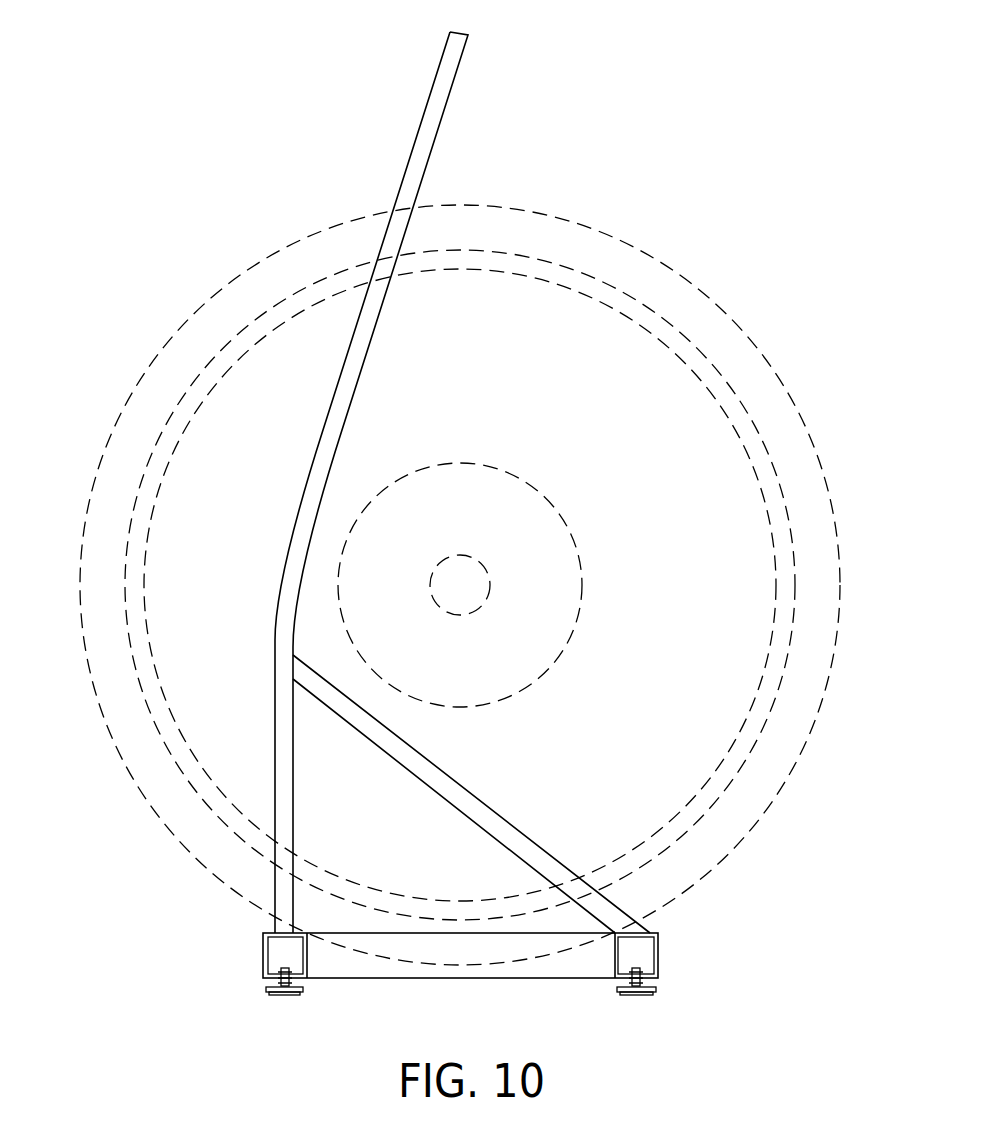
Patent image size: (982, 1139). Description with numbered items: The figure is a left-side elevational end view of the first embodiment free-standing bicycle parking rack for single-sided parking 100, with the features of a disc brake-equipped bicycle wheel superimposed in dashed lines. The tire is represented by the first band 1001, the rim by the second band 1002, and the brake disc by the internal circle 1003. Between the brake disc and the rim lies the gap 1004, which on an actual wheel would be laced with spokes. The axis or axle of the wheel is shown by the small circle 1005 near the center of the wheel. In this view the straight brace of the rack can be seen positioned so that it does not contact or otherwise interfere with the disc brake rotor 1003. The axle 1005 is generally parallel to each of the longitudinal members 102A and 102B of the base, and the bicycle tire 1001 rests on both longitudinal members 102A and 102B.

The free-standing bicycle parking rack for single-sided parking 100 is at (401, 74).
The longitudinal member 102A is at (268, 958).
The longitudinal member 102B is at (655, 958).
The first band 1001 is at (218, 323).
The second band 1002 is at (187, 407).
The internal circle 1003 is at (522, 533).
The gap 1004 is at (587, 409).
The small circle 1005 is at (460, 585).